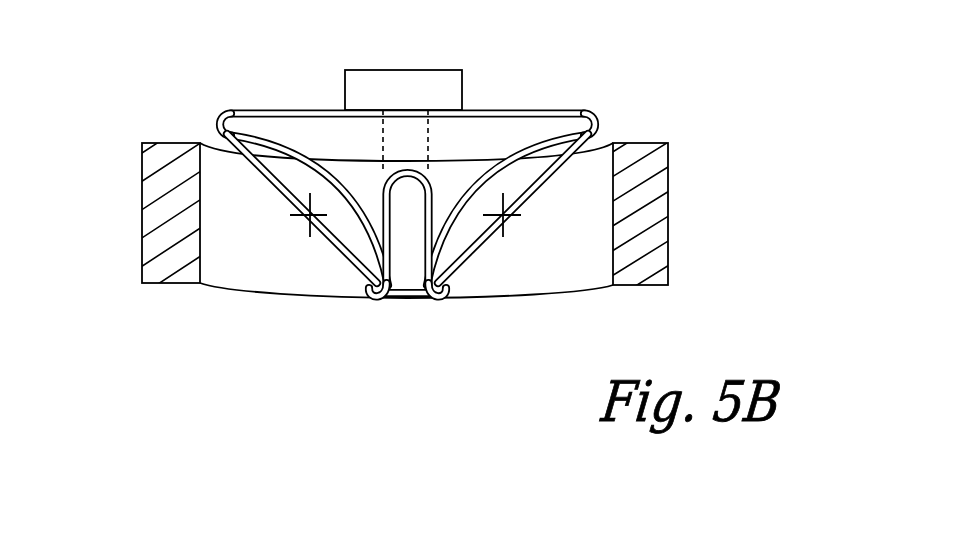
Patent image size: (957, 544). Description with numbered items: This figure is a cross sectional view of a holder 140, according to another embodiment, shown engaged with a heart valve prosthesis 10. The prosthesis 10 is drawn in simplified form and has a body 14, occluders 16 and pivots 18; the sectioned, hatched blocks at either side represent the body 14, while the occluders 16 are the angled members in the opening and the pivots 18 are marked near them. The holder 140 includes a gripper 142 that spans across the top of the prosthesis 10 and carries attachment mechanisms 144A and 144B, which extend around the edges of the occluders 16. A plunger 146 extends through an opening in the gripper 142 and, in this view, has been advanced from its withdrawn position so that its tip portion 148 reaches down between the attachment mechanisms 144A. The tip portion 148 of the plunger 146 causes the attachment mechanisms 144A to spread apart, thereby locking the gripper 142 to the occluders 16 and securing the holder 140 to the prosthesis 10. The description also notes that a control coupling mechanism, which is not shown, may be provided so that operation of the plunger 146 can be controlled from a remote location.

The heart valve prosthesis 10 is at (382, 195).
The body 14 is at (142, 253).
The occluders 16 is at (268, 186).
The pivots 18 is at (303, 218).
The holder 140 is at (423, 193).
The gripper 142 is at (515, 110).
The attachment mechanisms 144A is at (376, 301).
The attachment mechanisms 144B is at (216, 120).
The plunger 146 is at (362, 87).
The tip portion 148 is at (408, 268).